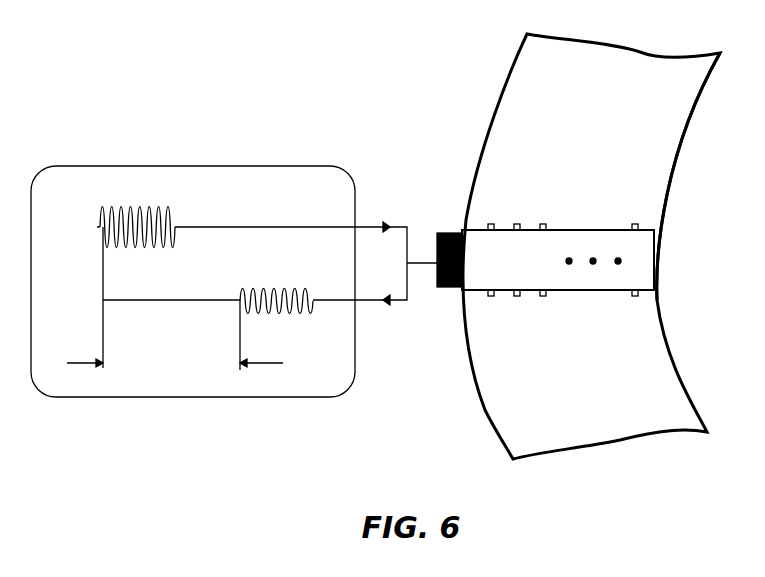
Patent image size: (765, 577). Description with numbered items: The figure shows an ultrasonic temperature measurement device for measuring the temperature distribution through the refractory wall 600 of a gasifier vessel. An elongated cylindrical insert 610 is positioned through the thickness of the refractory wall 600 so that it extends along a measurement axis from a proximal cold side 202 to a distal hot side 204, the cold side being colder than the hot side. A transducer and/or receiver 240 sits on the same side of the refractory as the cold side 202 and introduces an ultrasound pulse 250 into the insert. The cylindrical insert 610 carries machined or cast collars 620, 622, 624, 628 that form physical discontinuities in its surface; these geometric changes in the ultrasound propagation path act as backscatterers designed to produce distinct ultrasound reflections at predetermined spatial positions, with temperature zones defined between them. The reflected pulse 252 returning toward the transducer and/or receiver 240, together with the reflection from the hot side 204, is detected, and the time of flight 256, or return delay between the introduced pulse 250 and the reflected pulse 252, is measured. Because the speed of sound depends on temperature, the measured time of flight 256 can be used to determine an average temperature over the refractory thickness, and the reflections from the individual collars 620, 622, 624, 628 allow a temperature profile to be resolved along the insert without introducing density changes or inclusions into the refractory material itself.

The ultrasound pulse 250 is at (140, 208).
The reflected pulse 252 is at (278, 287).
The time of flight 256 is at (176, 363).
The cold side 202 is at (460, 230).
The transducer and/or receiver 240 is at (437, 287).
The hot side 204 is at (659, 258).
The refractory wall 600 is at (575, 397).
The cylindrical insert 610 is at (598, 228).
The collar 620 is at (489, 224).
The collar 622 is at (512, 297).
The collar 624 is at (541, 224).
The collar 628 is at (635, 297).